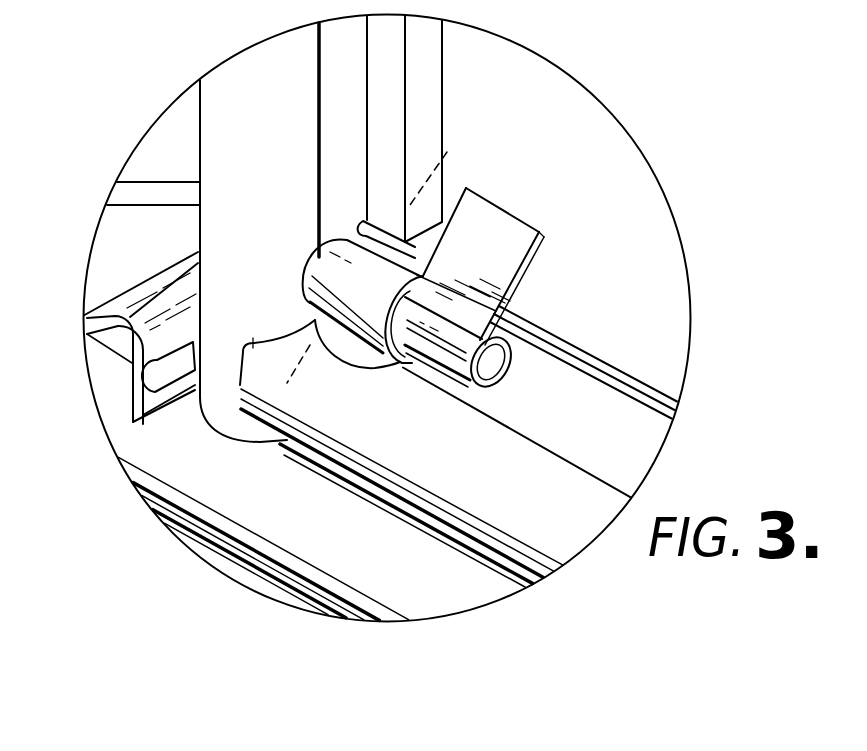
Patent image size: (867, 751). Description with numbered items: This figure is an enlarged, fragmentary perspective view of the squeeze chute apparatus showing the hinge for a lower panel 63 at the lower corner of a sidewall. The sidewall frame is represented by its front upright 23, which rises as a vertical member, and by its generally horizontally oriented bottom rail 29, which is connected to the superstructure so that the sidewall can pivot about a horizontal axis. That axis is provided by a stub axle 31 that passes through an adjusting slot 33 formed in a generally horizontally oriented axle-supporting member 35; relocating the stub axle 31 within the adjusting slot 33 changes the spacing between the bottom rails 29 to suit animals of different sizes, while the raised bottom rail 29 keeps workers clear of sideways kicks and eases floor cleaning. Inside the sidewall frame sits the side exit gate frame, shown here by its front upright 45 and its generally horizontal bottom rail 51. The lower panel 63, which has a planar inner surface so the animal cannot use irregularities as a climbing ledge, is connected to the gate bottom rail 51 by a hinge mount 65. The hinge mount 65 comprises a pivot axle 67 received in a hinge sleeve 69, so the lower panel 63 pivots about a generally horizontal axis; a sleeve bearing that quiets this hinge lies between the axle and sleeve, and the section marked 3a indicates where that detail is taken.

The front upright 23 is at (200, 123).
The front upright 45 is at (319, 107).
The hinge sleeve 69 is at (305, 273).
The pivot axle 67 is at (506, 372).
The lower panel 63 is at (592, 181).
The hinge mount 65 is at (572, 286).
The bottom rail 51 is at (550, 450).
The bottom rail 29 is at (407, 527).
The axle-supporting member 35 is at (130, 367).
The stub axle 31 is at (155, 377).
The adjusting slot 33 is at (131, 418).
The section line 3a is at (447, 152).